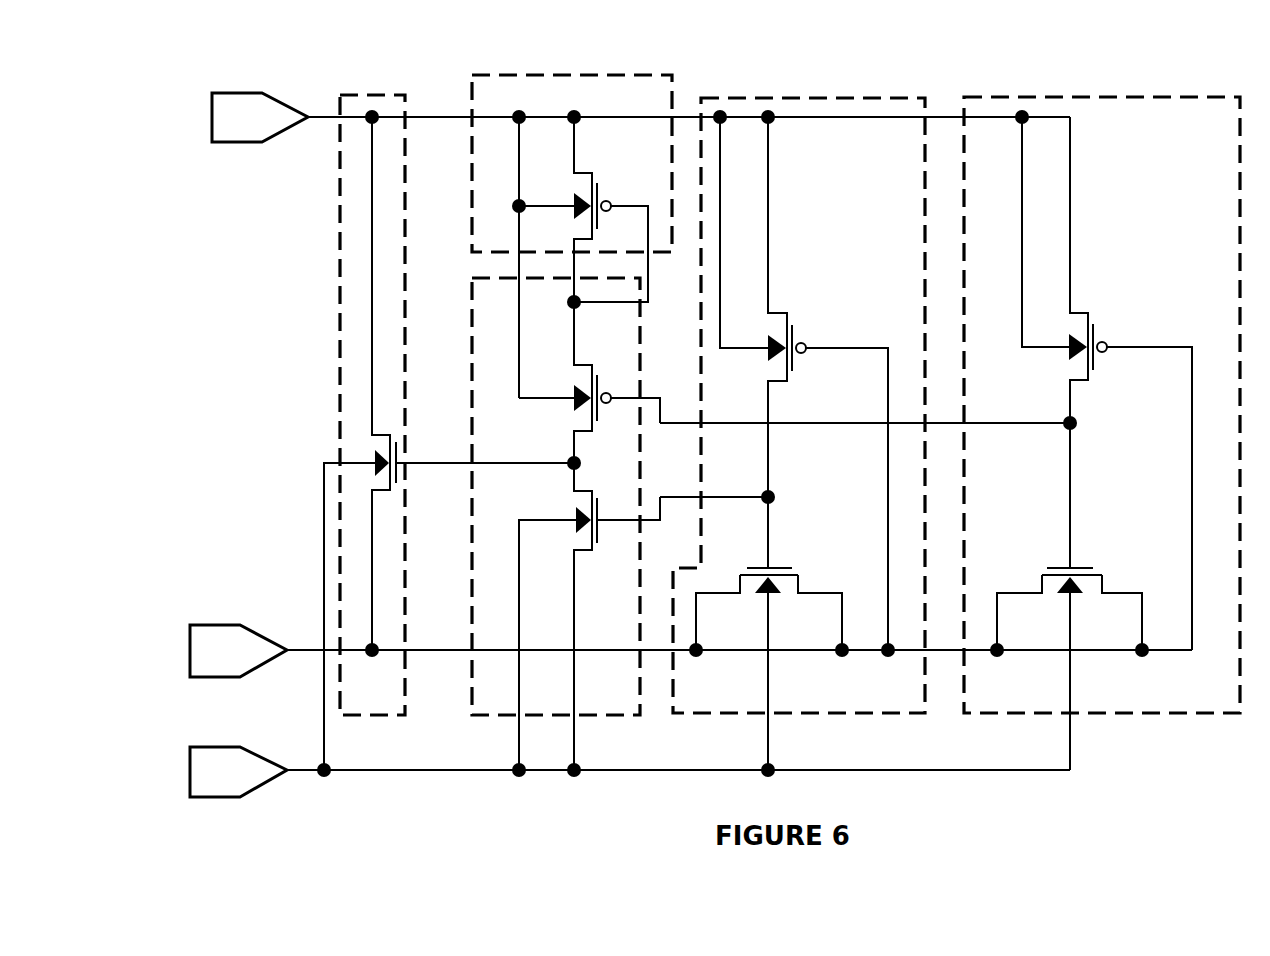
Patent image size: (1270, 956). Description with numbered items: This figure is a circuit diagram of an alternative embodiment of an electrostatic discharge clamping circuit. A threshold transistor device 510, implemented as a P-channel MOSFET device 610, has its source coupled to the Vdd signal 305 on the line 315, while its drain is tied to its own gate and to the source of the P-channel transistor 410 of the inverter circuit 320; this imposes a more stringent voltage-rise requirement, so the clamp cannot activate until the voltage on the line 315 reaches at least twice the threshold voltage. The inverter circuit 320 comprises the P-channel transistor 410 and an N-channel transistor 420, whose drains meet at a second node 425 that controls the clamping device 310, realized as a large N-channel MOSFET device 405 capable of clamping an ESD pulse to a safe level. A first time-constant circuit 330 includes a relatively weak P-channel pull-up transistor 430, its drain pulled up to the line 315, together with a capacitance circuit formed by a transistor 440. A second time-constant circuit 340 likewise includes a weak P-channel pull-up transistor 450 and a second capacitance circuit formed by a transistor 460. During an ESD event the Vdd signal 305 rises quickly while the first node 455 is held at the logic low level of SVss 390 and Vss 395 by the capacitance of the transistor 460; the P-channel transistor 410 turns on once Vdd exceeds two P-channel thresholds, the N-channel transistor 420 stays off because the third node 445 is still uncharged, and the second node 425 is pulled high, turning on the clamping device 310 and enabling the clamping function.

The Vdd signal 305 is at (212, 97).
The line 315 is at (327, 118).
The clamping device 310 is at (340, 398).
The inverter circuit 320 is at (472, 413).
The first time-constant circuit 330 is at (818, 97).
The second time-constant circuit 340 is at (1068, 97).
The threshold transistor device 510 is at (470, 213).
The P-channel MOSFET device 610 is at (587, 173).
The P-channel transistor 410 is at (593, 368).
The N-channel transistor 420 is at (596, 546).
The N-channel MOSFET device 405 is at (378, 492).
The second node 425 is at (574, 460).
The P-channel pull-up transistor 430 is at (782, 312).
The transistor 440 is at (803, 590).
The third node 445 is at (775, 497).
The P-channel pull-up transistor 450 is at (1080, 312).
The first node 455 is at (1077, 423).
The transistor 460 is at (1040, 587).
The SVss 390 is at (200, 625).
The Vss 395 is at (218, 797).